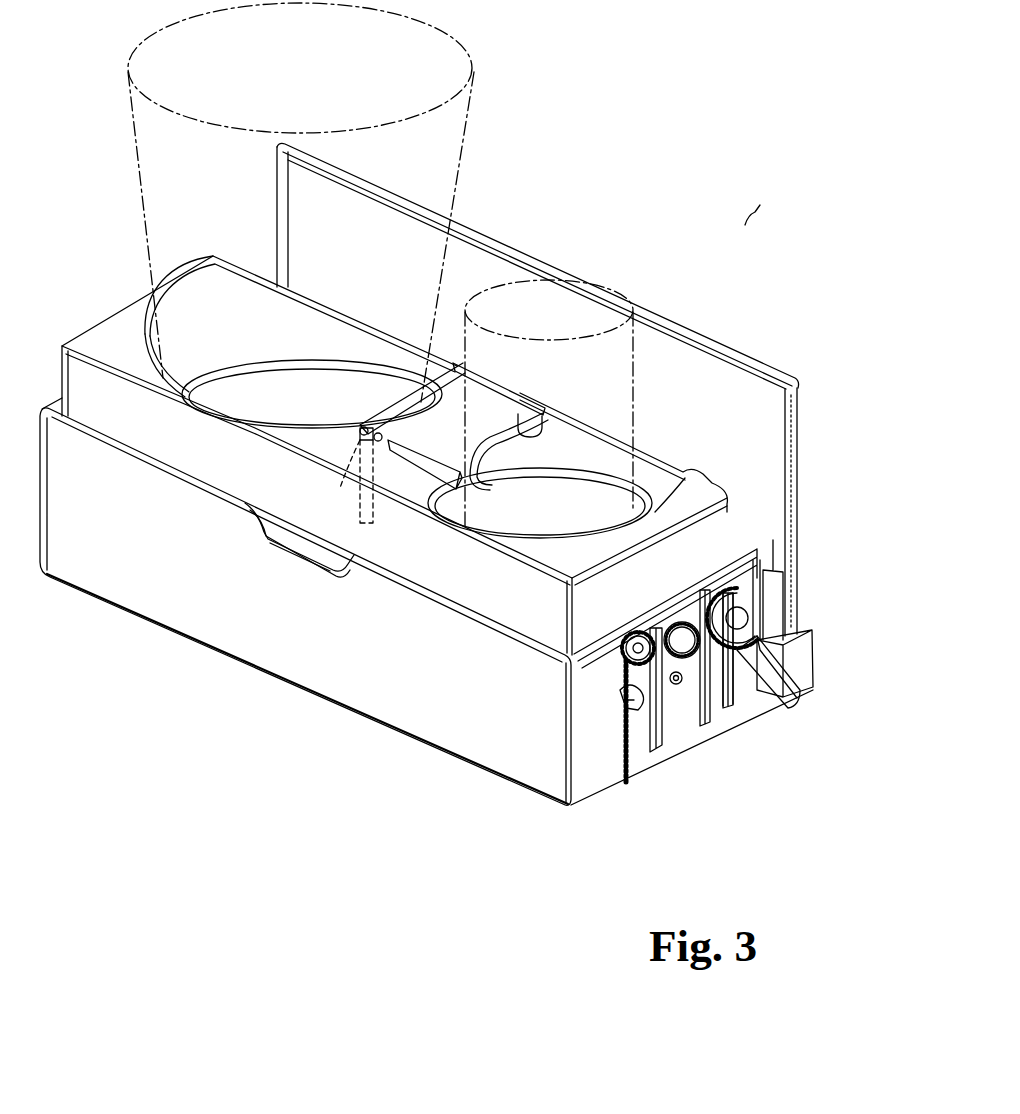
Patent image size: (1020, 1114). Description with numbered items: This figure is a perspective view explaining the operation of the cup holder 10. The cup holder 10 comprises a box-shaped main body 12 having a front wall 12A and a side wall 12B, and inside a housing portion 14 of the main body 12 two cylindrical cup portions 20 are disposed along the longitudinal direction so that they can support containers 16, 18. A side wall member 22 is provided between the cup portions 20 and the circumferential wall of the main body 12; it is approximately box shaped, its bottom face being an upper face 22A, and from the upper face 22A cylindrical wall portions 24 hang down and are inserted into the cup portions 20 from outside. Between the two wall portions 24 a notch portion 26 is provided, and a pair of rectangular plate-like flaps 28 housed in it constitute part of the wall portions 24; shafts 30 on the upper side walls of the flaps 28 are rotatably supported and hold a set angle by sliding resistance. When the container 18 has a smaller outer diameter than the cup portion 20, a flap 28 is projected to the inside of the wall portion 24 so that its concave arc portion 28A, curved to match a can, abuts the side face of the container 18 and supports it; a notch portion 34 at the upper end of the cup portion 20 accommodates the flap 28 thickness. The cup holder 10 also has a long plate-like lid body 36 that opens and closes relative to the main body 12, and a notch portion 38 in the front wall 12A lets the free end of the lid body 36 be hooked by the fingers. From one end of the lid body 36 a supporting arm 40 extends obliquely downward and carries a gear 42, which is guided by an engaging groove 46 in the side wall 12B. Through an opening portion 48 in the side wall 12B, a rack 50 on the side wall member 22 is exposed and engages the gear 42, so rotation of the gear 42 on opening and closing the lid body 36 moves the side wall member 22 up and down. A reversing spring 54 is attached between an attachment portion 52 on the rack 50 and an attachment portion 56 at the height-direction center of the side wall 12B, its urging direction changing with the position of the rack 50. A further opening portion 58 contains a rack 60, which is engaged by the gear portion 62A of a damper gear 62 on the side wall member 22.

The cup holder 10 is at (747, 226).
The main body 12 is at (516, 806).
The front wall 12A is at (440, 742).
The side wall 12B is at (600, 783).
The housing portion 14 is at (473, 606).
The container 16 is at (447, 152).
The container 18 is at (663, 306).
The cup portions 20 is at (292, 392).
The side wall member 22 is at (114, 296).
The upper face 22A is at (264, 541).
The wall portions 24 is at (340, 322).
The notch portion 26 is at (490, 493).
The flaps 28 is at (503, 400).
The concave arc portion 28A is at (543, 408).
The shafts 30 is at (337, 502).
The notch portion 34 is at (484, 451).
The lid body 36 is at (770, 452).
The notch portion 38 is at (307, 574).
The supporting arm 40 is at (773, 667).
The gear 42 is at (753, 612).
The engaging groove 46 is at (727, 717).
The opening portion 48 is at (694, 720).
The rack 50 is at (700, 618).
The attachment portion 52 is at (713, 592).
The reversing spring 54 is at (677, 622).
The attachment portion 56 is at (684, 688).
The opening portion 58 is at (647, 760).
The rack 60 is at (633, 722).
The damper gear 62 is at (565, 714).
The gear portion 62A is at (630, 694).